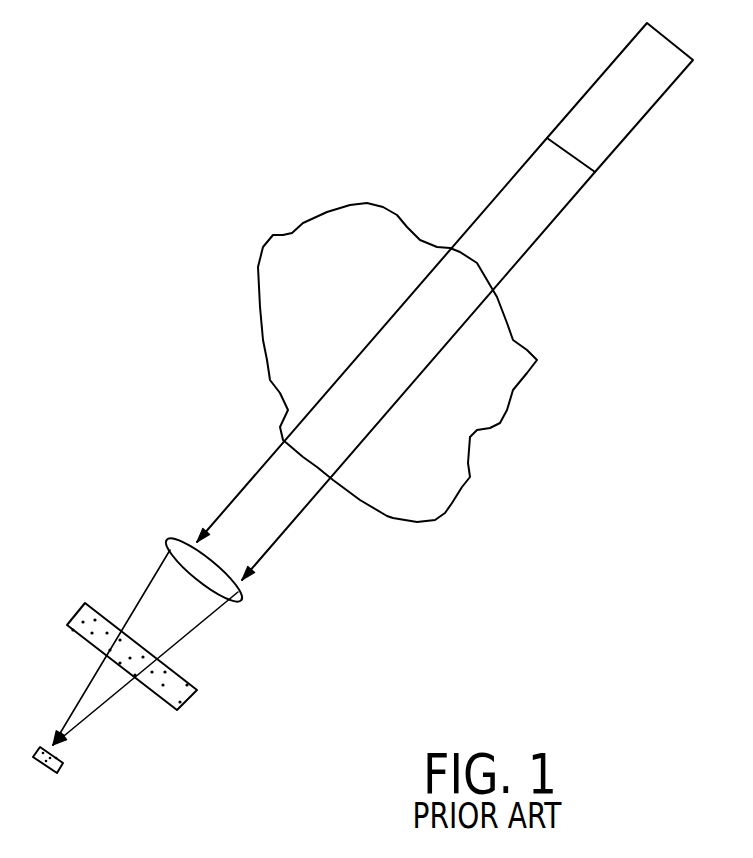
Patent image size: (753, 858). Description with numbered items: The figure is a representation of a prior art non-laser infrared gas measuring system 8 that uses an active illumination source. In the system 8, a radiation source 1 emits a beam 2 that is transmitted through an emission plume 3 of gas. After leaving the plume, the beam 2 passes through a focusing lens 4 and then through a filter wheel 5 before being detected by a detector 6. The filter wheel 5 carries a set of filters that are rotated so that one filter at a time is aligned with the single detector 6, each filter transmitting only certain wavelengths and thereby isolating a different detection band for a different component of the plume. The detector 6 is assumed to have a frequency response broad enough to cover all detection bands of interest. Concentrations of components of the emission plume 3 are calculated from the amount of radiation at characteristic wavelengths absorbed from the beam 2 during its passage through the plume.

The radiation source 1 is at (652, 88).
The beam 2 is at (533, 250).
The emission plume 3 is at (500, 408).
The lens 4 is at (243, 592).
The filter wheel 5 is at (180, 705).
The detector 6 is at (62, 768).
The system 8 is at (277, 162).